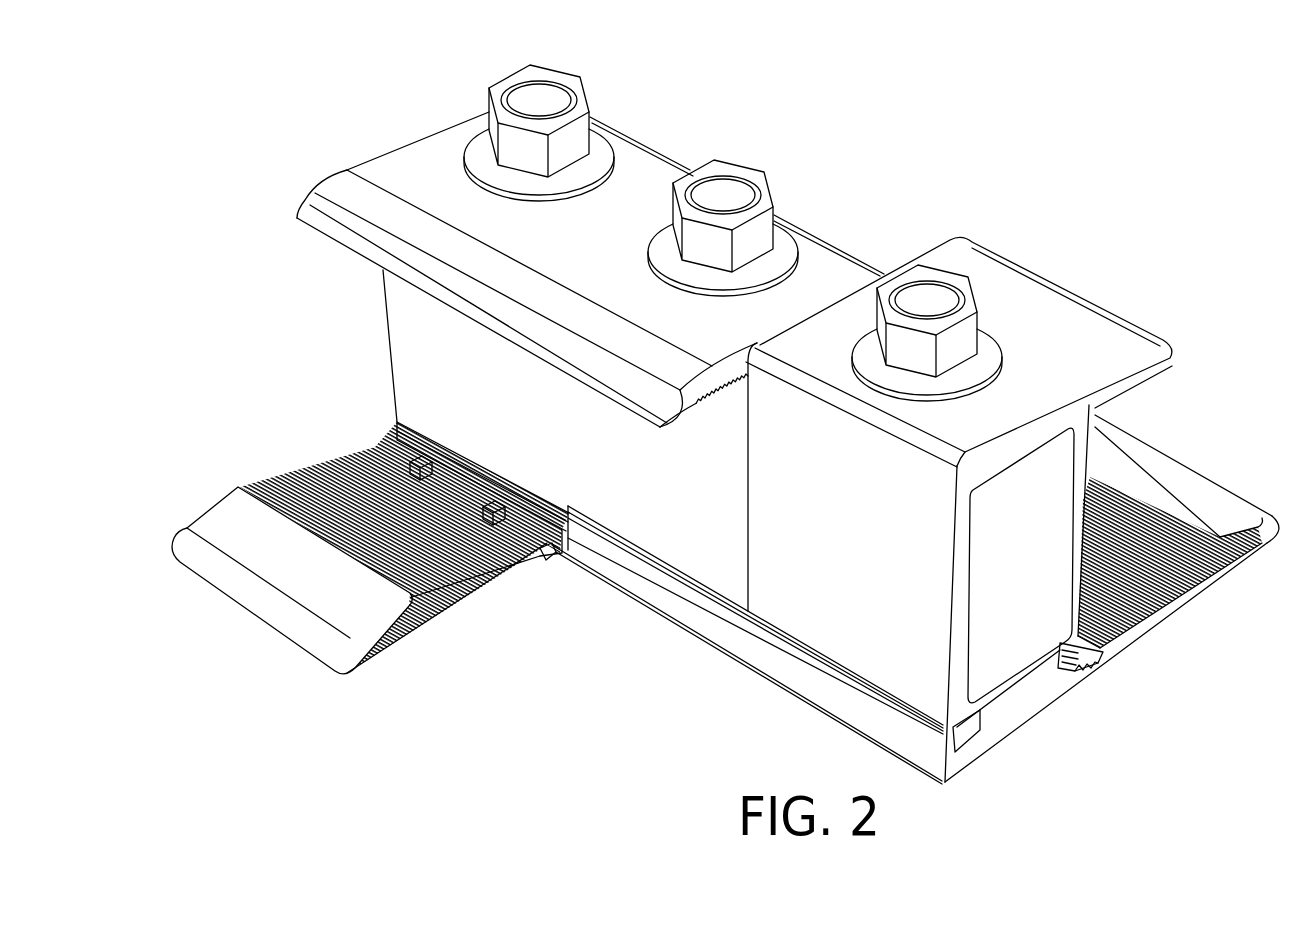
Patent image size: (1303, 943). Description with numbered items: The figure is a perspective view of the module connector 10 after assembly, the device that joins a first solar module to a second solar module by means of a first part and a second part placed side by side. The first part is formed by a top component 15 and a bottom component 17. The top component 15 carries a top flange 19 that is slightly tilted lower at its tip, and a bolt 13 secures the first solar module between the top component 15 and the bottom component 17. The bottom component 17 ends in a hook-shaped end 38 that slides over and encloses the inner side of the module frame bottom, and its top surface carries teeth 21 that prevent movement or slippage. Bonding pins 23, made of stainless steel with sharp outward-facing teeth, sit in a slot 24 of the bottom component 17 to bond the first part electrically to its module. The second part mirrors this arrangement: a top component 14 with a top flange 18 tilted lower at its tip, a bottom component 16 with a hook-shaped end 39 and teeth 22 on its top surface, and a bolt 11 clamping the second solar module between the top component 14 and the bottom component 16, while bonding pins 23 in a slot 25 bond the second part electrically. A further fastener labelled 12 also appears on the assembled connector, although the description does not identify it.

The module connector 10 is at (343, 76).
The bolt 11 is at (545, 72).
The nut 12 is at (730, 165).
The bolt 13 is at (914, 268).
The top component 14 is at (798, 597).
The top component 15 is at (670, 483).
The bottom component 16 is at (1193, 588).
The bottom component 17 is at (450, 613).
The top flange 18 is at (1100, 320).
The top flange 19 is at (320, 205).
The teeth 21 is at (350, 487).
The teeth 22 is at (1177, 600).
The bonding pins 23 is at (418, 462).
The slot 24 is at (543, 548).
The slot 25 is at (1105, 650).
The hook-shaped end 38 is at (208, 523).
The hook-shaped end 39 is at (1223, 517).